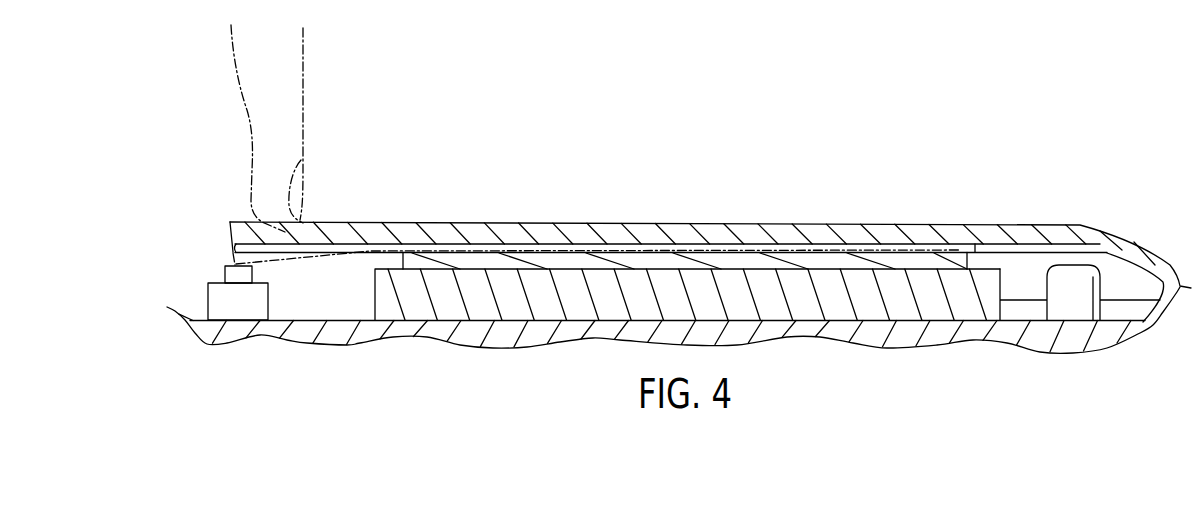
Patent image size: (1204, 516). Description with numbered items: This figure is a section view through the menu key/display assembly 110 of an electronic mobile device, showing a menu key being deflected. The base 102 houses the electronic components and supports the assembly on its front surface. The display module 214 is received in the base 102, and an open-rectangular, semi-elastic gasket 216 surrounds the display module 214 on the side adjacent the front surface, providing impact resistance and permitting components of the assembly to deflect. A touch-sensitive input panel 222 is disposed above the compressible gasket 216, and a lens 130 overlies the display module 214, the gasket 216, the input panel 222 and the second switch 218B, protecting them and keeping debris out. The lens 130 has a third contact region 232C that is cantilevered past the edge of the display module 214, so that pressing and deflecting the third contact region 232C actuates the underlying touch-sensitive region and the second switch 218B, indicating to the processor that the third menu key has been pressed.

The menu key/display assembly 110 is at (958, 184).
The lens 130 is at (803, 224).
The touch-sensitive input panel 222 is at (681, 248).
The gasket 216 is at (551, 253).
The display module 214 is at (474, 268).
The second switch 218B is at (268, 300).
The base 102 is at (905, 350).
The third contact region 232C is at (232, 222).